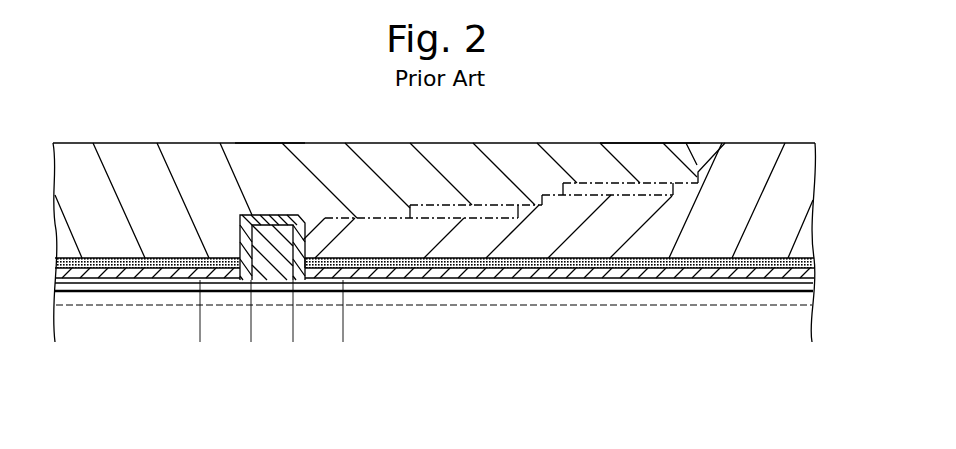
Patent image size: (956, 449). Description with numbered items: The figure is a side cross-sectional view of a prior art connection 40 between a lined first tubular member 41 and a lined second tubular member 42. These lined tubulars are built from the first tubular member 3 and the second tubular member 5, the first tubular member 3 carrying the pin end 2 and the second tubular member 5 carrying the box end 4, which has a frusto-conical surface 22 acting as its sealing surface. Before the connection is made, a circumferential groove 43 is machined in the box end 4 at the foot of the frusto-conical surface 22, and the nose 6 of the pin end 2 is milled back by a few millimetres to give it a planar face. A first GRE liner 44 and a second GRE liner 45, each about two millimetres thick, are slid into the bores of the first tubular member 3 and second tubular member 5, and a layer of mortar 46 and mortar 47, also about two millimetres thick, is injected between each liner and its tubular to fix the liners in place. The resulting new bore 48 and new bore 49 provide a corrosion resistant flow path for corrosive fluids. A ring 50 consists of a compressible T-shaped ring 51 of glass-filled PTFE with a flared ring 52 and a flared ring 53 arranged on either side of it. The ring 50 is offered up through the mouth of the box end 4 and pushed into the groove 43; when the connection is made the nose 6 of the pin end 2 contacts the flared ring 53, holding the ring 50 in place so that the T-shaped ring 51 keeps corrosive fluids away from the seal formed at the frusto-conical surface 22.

The pin end 2 is at (440, 245).
The first tubular member 3 is at (731, 143).
The box end 4 is at (520, 143).
The second tubular member 5 is at (118, 143).
The nose 6 is at (305, 256).
The frusto-conical surface 22 is at (323, 218).
The connection 40 is at (648, 140).
The lined first tubular member 41 is at (752, 133).
The lined second tubular member 42 is at (270, 140).
The circumferential groove 43 is at (273, 215).
The first GRE liner 44 is at (712, 279).
The second GRE liner 45 is at (176, 280).
The mortar 46 is at (543, 263).
The mortar 47 is at (103, 268).
The new bore 48 is at (597, 406).
The new bore 49 is at (112, 407).
The ring 50 is at (273, 320).
The T-shaped ring 51 is at (268, 250).
The flared ring 52 is at (240, 247).
The flared ring 53 is at (305, 270).